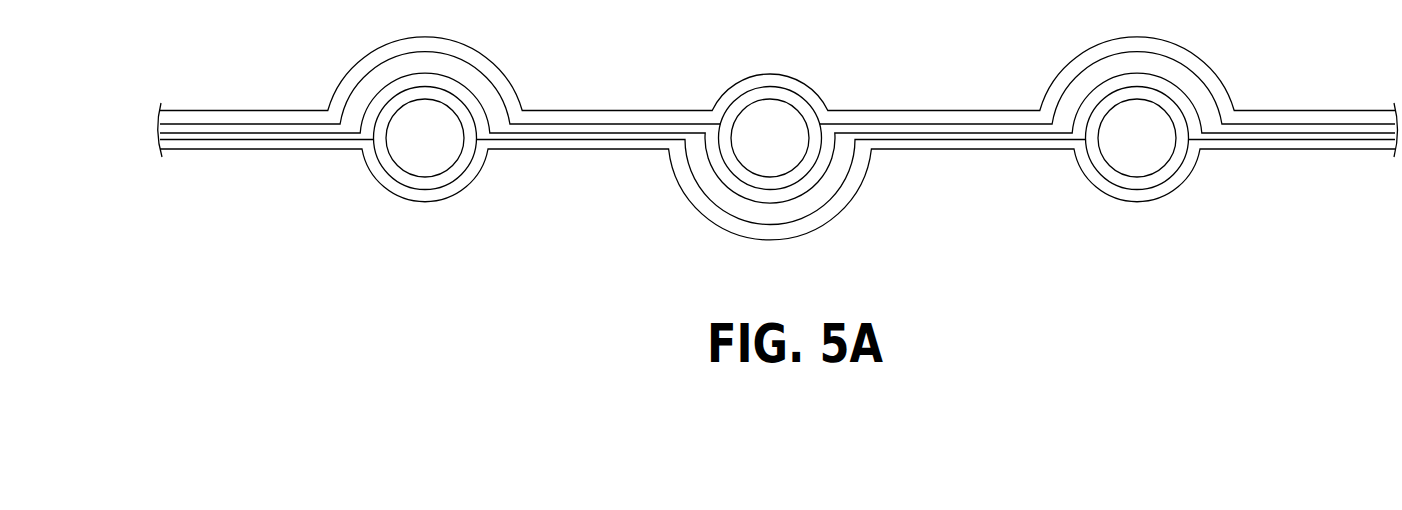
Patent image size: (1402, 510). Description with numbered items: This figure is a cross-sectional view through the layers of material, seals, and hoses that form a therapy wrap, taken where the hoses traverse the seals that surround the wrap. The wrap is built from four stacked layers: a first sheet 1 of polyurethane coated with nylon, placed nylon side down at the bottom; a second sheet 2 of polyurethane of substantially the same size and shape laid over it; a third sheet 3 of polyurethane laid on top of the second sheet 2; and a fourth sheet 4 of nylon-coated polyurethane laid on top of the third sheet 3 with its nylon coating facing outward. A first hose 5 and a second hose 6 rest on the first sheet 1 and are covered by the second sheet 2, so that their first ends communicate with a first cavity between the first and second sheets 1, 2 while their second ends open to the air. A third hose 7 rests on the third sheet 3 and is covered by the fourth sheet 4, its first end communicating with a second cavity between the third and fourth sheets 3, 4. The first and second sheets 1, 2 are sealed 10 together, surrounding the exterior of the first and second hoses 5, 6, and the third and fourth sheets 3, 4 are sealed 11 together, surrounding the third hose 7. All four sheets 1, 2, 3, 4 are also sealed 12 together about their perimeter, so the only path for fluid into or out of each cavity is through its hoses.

The first sheet 1 is at (136, 162).
The second sheet 2 is at (137, 144).
The third sheet 3 is at (136, 129).
The fourth sheet 4 is at (137, 102).
The first hose 5 is at (423, 212).
The second hose 6 is at (1130, 212).
The third hose 7 is at (767, 212).
The seal 10 is at (197, 162).
The seal 11 is at (225, 101).
The seal 12 is at (272, 154).